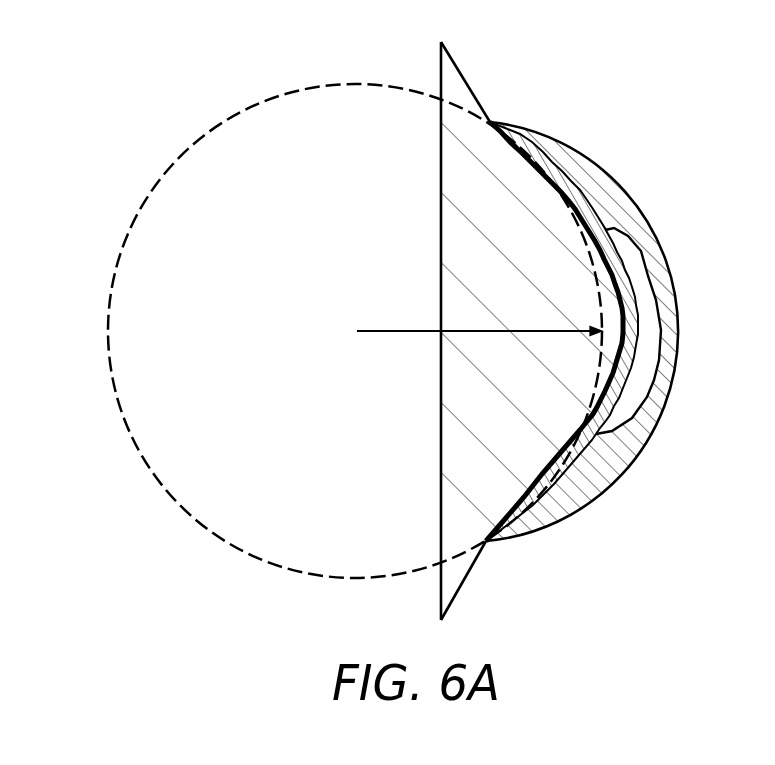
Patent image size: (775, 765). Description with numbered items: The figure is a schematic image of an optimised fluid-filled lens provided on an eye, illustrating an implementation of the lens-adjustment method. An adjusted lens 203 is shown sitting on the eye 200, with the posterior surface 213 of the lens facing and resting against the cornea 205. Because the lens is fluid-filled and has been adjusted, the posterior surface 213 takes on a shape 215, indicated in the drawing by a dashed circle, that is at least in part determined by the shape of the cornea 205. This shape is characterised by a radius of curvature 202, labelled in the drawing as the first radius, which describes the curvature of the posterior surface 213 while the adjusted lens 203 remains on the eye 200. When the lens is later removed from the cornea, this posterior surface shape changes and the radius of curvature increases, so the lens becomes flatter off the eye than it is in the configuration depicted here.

The eye 200 is at (450, 226).
The radius of curvature 202 is at (385, 334).
The adjusted lens 203 is at (631, 96).
The cornea 205 is at (613, 334).
The posterior surface 213 is at (547, 490).
The shape 215 is at (603, 387).